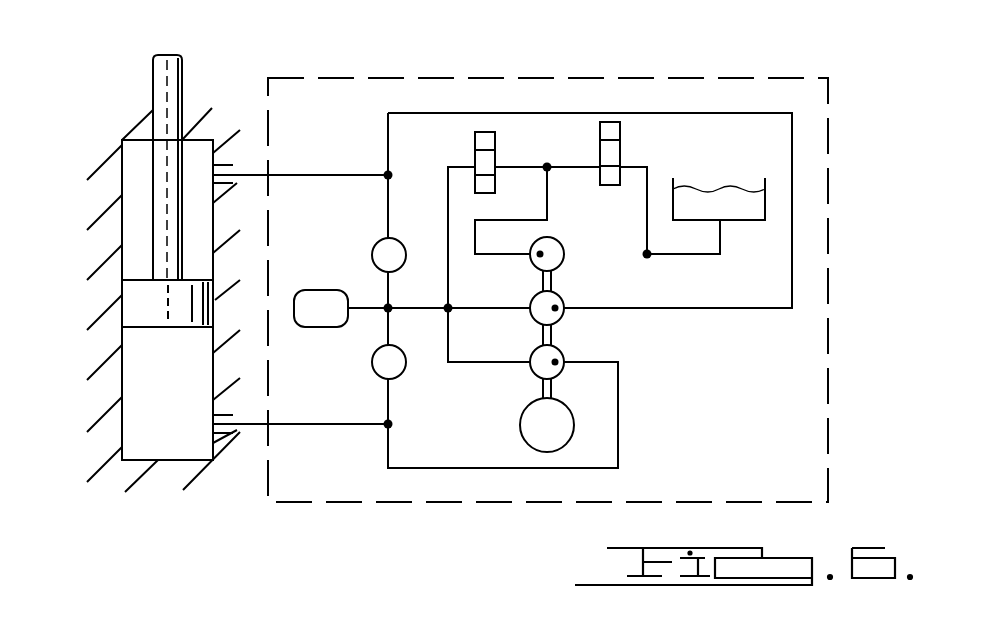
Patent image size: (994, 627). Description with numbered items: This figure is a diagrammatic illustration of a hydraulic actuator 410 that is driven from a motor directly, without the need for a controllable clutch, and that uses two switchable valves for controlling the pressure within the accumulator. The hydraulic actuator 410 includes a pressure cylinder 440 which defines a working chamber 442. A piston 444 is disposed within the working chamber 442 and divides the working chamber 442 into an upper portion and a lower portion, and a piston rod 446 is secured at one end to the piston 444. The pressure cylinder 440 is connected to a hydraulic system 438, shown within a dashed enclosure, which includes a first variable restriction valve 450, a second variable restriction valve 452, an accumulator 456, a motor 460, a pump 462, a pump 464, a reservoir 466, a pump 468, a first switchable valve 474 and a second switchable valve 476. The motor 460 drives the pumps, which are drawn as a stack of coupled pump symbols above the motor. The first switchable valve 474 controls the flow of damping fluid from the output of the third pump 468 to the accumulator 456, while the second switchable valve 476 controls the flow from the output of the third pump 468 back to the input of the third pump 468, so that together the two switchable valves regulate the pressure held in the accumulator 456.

The hydraulic actuator 410 is at (143, 537).
The hydraulic system 438 is at (828, 407).
The pressure cylinder 440 is at (177, 460).
The working chamber 442 is at (133, 187).
The piston 444 is at (140, 309).
The piston rod 446 is at (178, 77).
The first variable restriction valve 450 is at (376, 244).
The second variable restriction valve 452 is at (378, 375).
The accumulator 456 is at (309, 297).
The motor 460 is at (530, 432).
The pump 462 is at (559, 318).
The pump 464 is at (538, 369).
The reservoir 466 is at (742, 210).
The pump 468 is at (556, 262).
The first switchable valve 474 is at (483, 142).
The second switchable valve 476 is at (610, 128).